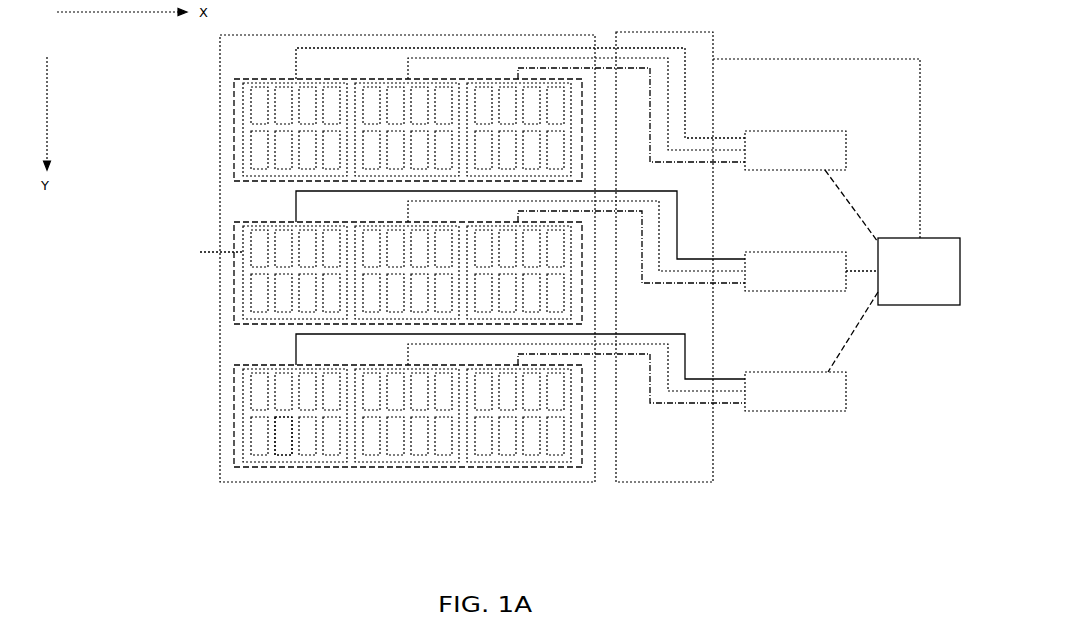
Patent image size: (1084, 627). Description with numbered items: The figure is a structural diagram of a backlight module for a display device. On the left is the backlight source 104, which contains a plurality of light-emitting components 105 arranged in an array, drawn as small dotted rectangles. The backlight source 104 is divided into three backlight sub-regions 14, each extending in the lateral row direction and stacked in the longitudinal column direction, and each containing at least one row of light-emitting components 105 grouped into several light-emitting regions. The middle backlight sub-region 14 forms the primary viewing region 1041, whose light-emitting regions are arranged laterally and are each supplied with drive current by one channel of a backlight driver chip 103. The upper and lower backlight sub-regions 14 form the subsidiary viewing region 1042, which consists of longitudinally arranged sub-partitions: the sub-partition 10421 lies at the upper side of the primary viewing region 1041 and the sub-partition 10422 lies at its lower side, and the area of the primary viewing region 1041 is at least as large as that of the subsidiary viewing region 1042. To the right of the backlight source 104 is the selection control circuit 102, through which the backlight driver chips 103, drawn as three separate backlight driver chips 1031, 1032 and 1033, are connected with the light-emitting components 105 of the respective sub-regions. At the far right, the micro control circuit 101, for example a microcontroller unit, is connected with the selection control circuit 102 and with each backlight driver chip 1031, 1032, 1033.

The micro control circuit 101 is at (919, 271).
The selection control circuit 102 is at (664, 257).
The backlight driver chips 103 is at (795, 271).
The backlight driver chip 1031 is at (795, 150).
The backlight driver chip 1032 is at (795, 271).
The backlight driver chip 1033 is at (795, 391).
The backlight source 104 is at (390, 35).
The light-emitting components 105 is at (284, 445).
The backlight sub-regions 14 is at (397, 279).
The primary viewing region 1041 is at (234, 277).
The subsidiary viewing region 1042 is at (397, 279).
The sub-partition 10421 is at (234, 128).
The sub-partition 10422 is at (234, 420).